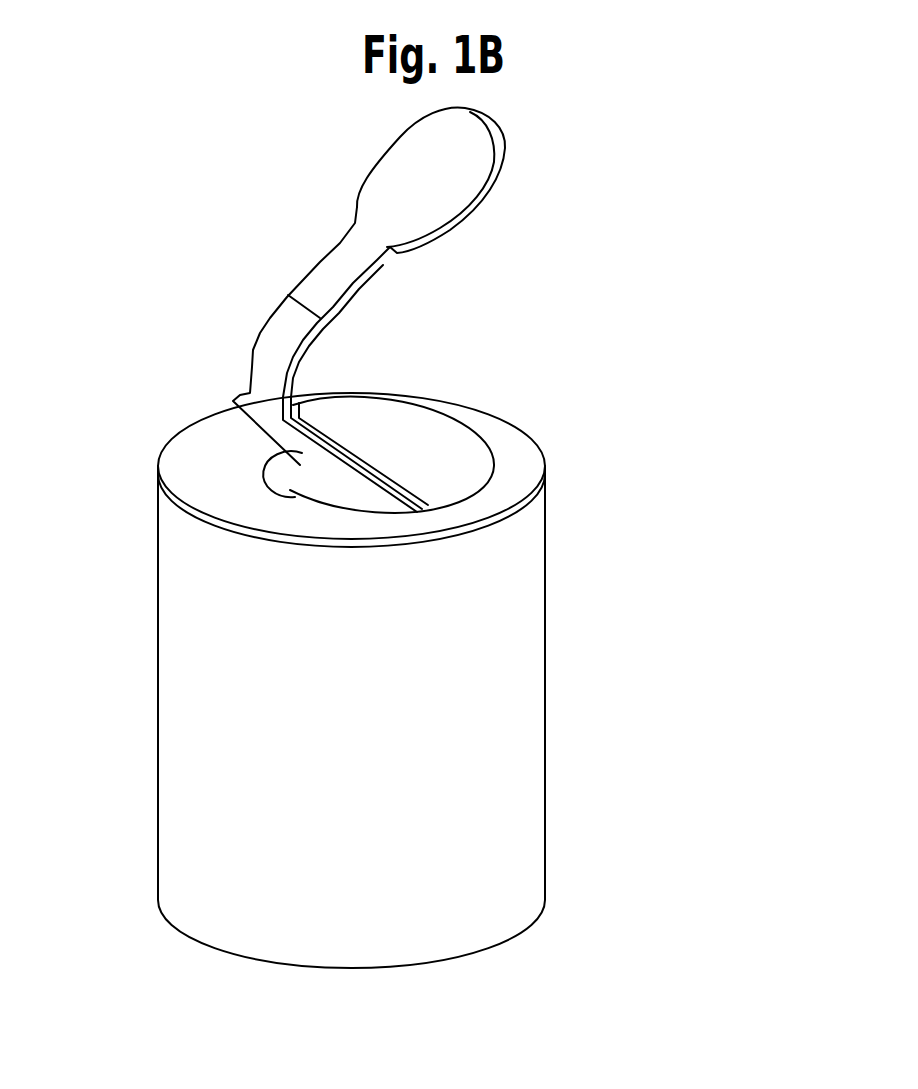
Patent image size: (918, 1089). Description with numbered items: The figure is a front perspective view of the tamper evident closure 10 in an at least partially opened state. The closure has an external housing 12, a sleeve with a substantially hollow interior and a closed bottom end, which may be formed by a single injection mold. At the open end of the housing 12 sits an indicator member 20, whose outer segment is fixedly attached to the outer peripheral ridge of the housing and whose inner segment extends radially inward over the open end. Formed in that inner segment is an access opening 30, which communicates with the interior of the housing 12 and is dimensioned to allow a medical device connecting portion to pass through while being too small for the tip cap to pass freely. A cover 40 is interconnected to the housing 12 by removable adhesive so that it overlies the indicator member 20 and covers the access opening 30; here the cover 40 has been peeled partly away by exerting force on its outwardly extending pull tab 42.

The tamper evident closure 10 is at (648, 602).
The external housing 12 is at (545, 727).
The indicator member 20 is at (215, 395).
The access opening 30 is at (294, 480).
The cover 40 is at (423, 432).
The pull tab 42 is at (470, 133).